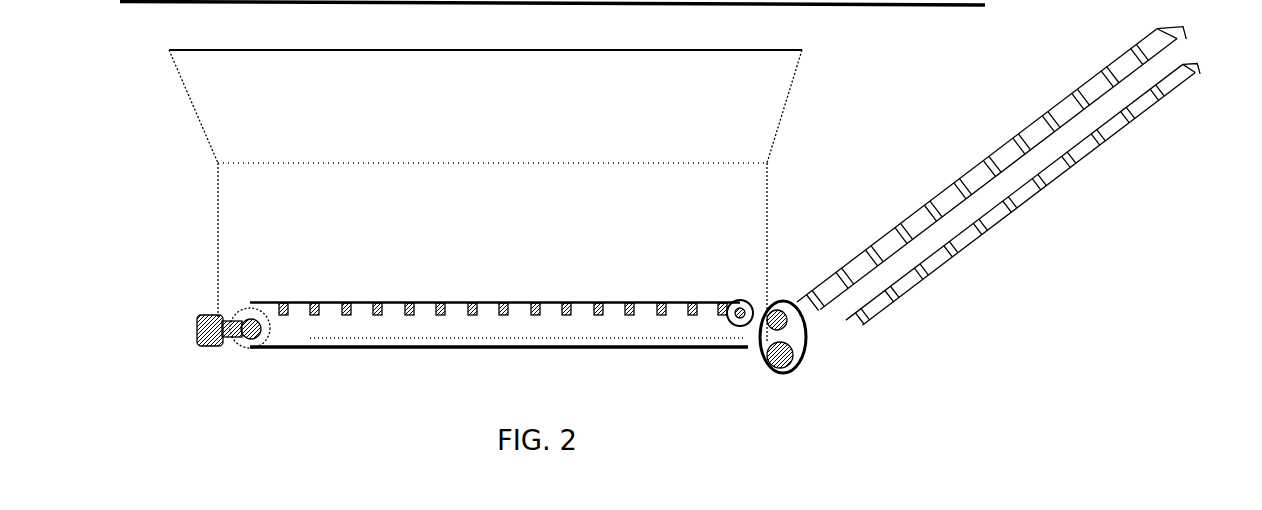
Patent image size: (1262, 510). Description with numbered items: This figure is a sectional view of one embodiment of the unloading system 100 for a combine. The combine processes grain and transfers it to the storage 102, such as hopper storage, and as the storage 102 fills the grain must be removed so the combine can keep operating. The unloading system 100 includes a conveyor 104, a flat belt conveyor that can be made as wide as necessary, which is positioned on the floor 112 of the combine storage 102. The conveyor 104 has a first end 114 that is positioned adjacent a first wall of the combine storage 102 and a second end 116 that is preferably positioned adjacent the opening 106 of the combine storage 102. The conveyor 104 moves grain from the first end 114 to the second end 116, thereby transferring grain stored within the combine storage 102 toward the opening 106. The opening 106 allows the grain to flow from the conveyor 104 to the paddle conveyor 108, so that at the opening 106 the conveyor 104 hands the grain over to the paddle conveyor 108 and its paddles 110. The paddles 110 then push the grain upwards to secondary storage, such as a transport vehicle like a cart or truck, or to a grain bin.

The unloading system 100 is at (1000, 177).
The storage 102 is at (258, 203).
The conveyor 104 is at (283, 298).
The opening 106 is at (777, 300).
The paddle conveyor 108 is at (978, 167).
The paddles 110 is at (990, 225).
The floor 112 is at (310, 352).
The first end 114 is at (253, 307).
The second end 116 is at (737, 312).